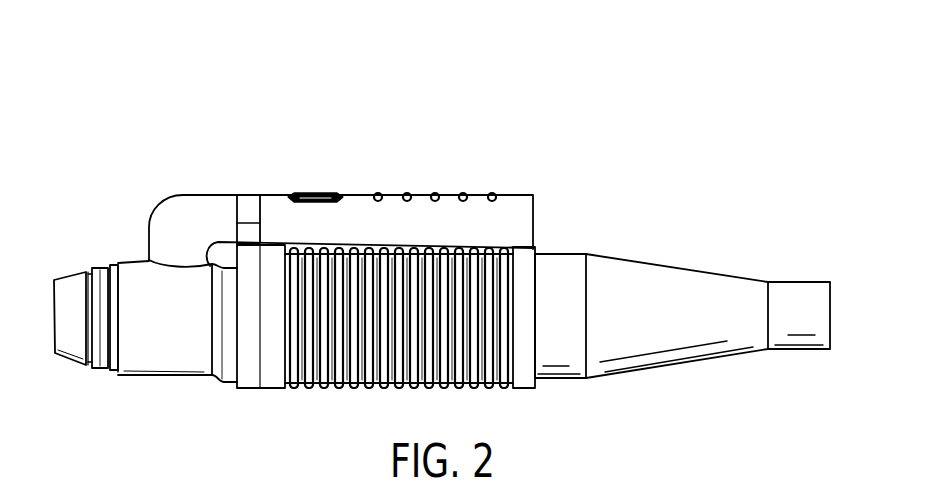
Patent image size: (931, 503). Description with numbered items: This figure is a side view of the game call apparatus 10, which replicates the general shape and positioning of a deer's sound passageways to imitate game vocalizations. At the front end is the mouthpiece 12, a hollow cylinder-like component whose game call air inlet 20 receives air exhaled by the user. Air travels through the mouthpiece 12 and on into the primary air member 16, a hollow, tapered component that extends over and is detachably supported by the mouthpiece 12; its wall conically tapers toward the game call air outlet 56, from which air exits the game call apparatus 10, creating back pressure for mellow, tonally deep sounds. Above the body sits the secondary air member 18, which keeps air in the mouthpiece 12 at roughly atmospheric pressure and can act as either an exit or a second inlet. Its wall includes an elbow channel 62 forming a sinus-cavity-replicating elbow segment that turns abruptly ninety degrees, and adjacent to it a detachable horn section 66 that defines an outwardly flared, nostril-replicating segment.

The game call apparatus 10 is at (521, 100).
The mouthpiece 12 is at (143, 378).
The primary air member 16 is at (603, 378).
The secondary air member 18 is at (280, 194).
The game call air inlet 20 is at (53, 300).
The game call air outlet 56 is at (830, 292).
The elbow channel 62 is at (182, 195).
The detachable horn section 66 is at (423, 194).